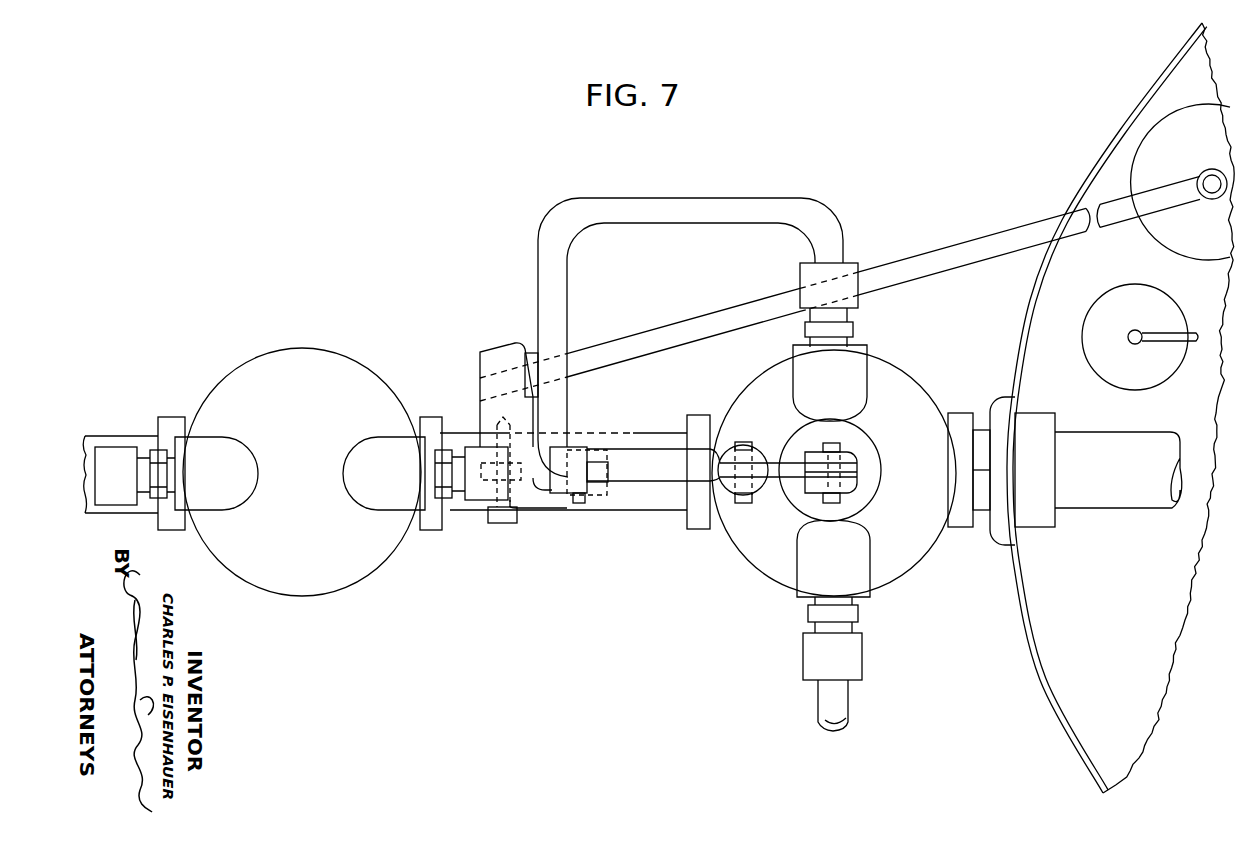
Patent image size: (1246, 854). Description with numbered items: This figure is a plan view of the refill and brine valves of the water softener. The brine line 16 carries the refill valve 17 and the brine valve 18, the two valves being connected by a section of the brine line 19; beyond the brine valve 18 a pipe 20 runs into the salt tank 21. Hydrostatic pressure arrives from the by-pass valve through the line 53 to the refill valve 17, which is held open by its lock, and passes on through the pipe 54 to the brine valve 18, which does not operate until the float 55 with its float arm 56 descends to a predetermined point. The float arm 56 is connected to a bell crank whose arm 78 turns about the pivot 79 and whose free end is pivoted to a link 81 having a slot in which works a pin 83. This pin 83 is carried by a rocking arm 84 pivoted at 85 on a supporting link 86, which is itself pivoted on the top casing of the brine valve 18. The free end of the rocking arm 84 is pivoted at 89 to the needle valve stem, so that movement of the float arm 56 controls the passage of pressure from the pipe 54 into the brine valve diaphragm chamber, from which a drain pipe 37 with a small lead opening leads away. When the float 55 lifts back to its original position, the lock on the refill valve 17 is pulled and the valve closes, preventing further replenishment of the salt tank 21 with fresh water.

The brine line 16 is at (137, 436).
The line 53 is at (92, 467).
The refill valve 17 is at (379, 565).
The section of the brine line 19 is at (647, 511).
The bell crank arm 78 is at (540, 508).
The bell crank pivot 79 is at (501, 523).
The pipe 54 is at (568, 268).
The pin 83 is at (586, 512).
The link 81 is at (600, 468).
The rocking arm 84 is at (660, 449).
The supporting link 86 is at (758, 451).
The rocking arm pivot 85 is at (748, 504).
The pivot 89 is at (840, 444).
The brine valve 18 is at (913, 560).
The drain pipe 37 is at (850, 697).
The float arm 56 is at (1000, 235).
The float 55 is at (1167, 234).
The pipe 20 is at (1114, 502).
The salt tank 21 is at (1022, 590).